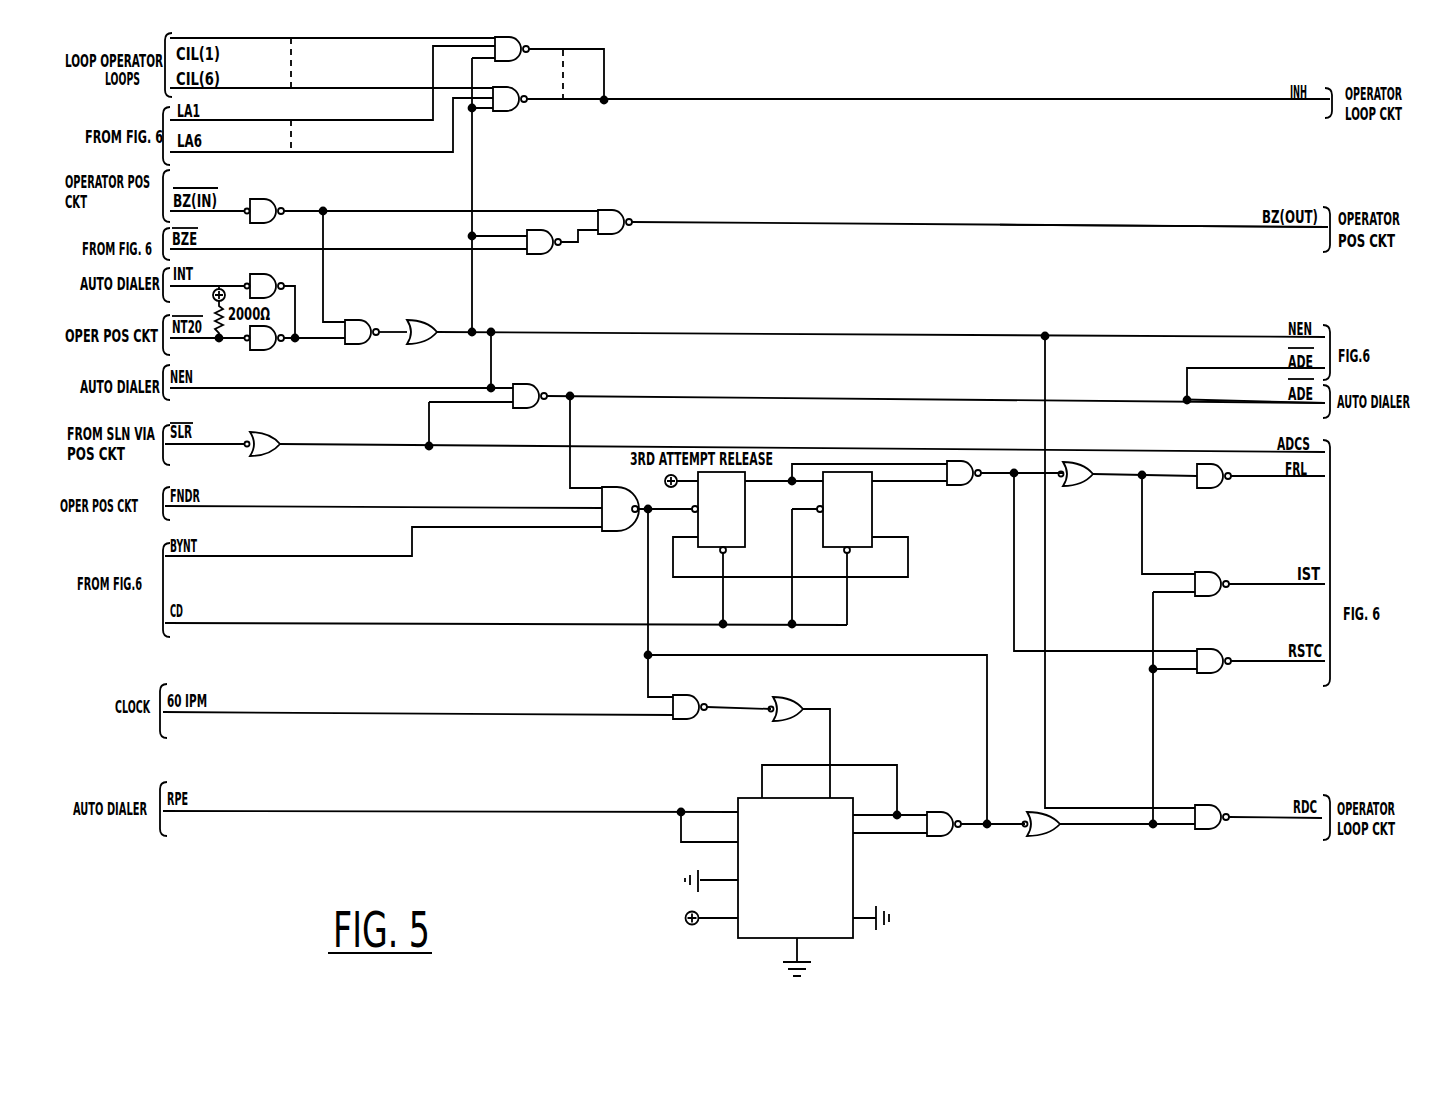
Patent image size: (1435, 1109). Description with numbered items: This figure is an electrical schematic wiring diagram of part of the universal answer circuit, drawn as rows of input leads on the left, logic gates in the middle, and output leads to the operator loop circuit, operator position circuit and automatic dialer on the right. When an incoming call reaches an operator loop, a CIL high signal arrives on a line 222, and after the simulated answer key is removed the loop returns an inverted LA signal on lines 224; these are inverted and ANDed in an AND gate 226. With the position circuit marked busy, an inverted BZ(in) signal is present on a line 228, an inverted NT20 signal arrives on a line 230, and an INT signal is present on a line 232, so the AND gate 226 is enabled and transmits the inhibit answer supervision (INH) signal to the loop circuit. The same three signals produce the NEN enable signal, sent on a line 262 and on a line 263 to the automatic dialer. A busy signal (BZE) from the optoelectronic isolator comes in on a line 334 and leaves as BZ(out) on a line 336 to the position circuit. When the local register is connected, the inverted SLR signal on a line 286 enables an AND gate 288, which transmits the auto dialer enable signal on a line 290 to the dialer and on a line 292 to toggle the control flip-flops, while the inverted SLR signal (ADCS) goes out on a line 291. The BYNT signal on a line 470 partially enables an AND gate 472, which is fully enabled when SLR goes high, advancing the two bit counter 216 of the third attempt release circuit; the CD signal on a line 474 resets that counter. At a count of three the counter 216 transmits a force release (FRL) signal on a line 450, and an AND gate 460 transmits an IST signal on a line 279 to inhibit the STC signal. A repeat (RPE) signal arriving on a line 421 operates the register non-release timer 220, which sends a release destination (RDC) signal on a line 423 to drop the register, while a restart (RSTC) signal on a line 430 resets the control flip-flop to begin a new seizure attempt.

The line 222 is at (205, 27).
The lines 224 is at (252, 115).
The AND gate 226 is at (504, 28).
The line 228 is at (230, 208).
The line 230 is at (205, 347).
The line 232 is at (213, 283).
The line 334 is at (357, 250).
The line 336 is at (1228, 227).
The line 262 is at (1235, 337).
The line 263 is at (397, 388).
The AND gate 288 is at (532, 384).
The line 290 is at (1262, 405).
The line 292 is at (1230, 368).
The line 286 is at (221, 447).
The line 291 is at (1195, 452).
The AND gate 472 is at (615, 533).
The line 470 is at (235, 555).
The line 474 is at (222, 622).
The two bit counter 216 is at (878, 513).
The line 450 is at (1276, 480).
The AND gate 460 is at (1210, 570).
The line 279 is at (1275, 588).
The line 430 is at (1258, 668).
The line 421 is at (245, 810).
The register non-release timer circuit 220 is at (855, 872).
The line 423 is at (1268, 821).